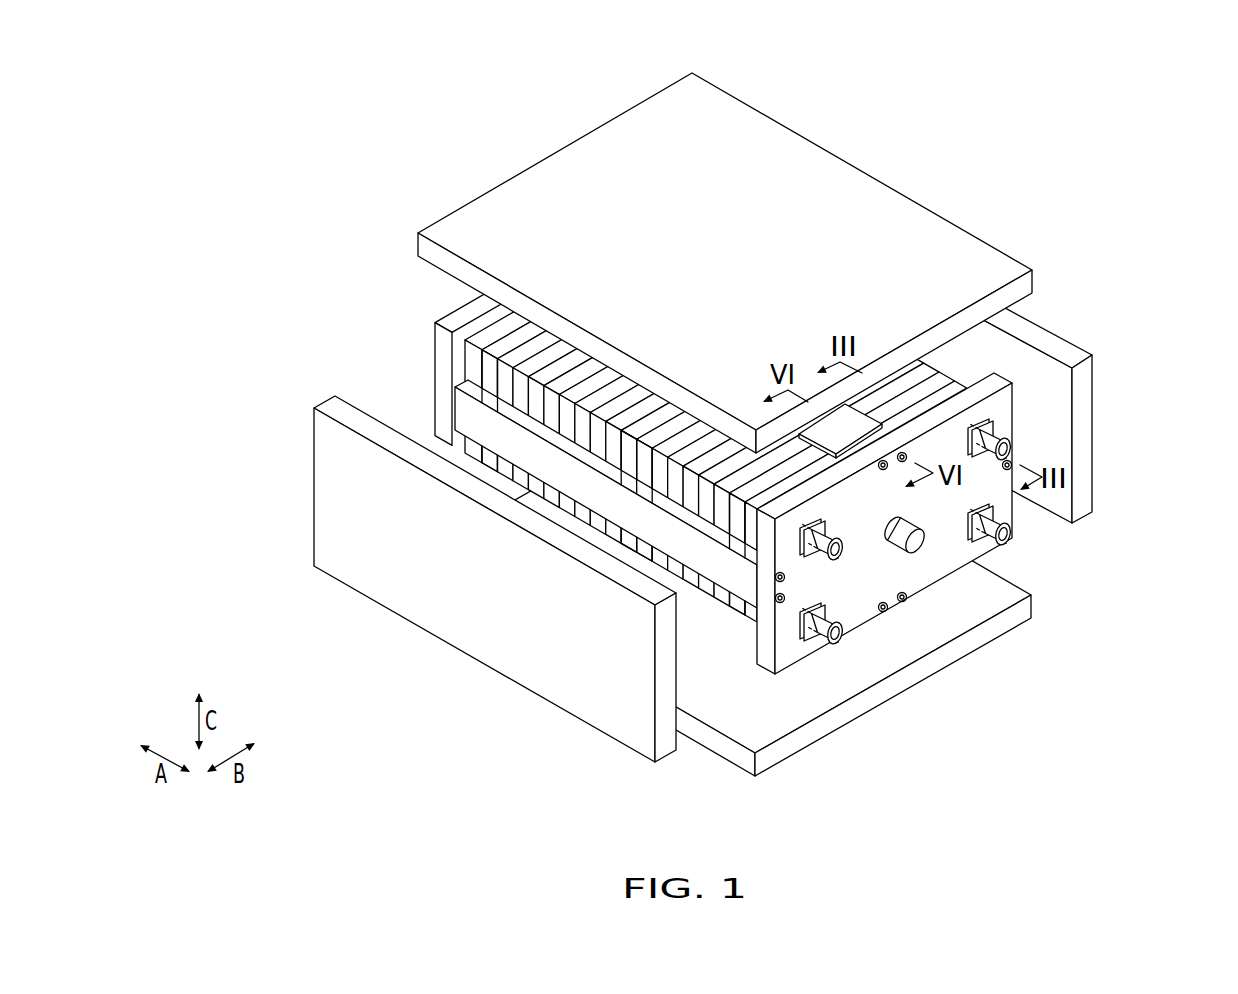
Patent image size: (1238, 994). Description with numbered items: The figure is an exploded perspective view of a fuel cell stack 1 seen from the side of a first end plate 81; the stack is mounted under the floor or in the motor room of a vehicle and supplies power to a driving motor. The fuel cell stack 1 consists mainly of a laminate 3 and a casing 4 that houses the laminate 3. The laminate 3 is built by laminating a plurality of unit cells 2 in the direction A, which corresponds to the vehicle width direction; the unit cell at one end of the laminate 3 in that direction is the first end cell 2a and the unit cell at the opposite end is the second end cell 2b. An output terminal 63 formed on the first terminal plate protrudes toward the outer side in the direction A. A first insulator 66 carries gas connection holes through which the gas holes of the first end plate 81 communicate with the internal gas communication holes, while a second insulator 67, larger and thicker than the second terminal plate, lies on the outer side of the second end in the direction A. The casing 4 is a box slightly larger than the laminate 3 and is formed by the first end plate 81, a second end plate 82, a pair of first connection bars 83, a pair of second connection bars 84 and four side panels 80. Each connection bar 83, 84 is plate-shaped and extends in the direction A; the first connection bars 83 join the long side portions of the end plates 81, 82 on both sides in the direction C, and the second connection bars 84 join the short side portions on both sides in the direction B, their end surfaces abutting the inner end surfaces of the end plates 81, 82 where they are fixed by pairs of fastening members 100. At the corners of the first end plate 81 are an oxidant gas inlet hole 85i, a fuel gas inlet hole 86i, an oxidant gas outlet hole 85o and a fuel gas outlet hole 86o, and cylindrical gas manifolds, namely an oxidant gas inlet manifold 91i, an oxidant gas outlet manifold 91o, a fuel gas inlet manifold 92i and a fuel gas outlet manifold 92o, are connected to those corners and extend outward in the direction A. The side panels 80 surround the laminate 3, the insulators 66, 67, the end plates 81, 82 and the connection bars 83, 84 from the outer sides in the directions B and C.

The fuel cell stack 1 is at (1012, 199).
The unit cells 2 is at (645, 468).
The first end cell 2a is at (732, 612).
The second end cell 2b is at (490, 460).
The laminate 3 is at (647, 412).
The casing 4 is at (725, 259).
The output terminal 63 is at (906, 554).
The first insulator 66 is at (740, 507).
The second insulator 67 is at (470, 363).
The side panels 80 is at (903, 207).
The first end plate 81 is at (967, 563).
The second end plate 82 is at (460, 313).
The first connection bar 83 is at (843, 437).
The second connection bar 84 is at (470, 413).
The oxidant gas inlet hole 85i is at (1005, 437).
The oxidant gas outlet hole 85o is at (822, 648).
The fuel gas inlet hole 86i is at (1007, 538).
The fuel gas outlet hole 86o is at (838, 556).
The oxidant gas inlet manifold 91i is at (1009, 450).
The oxidant gas outlet manifold 91o is at (840, 640).
The fuel gas inlet manifold 92i is at (1009, 544).
The fuel gas outlet manifold 92o is at (838, 549).
The fastening members 100 is at (883, 460).